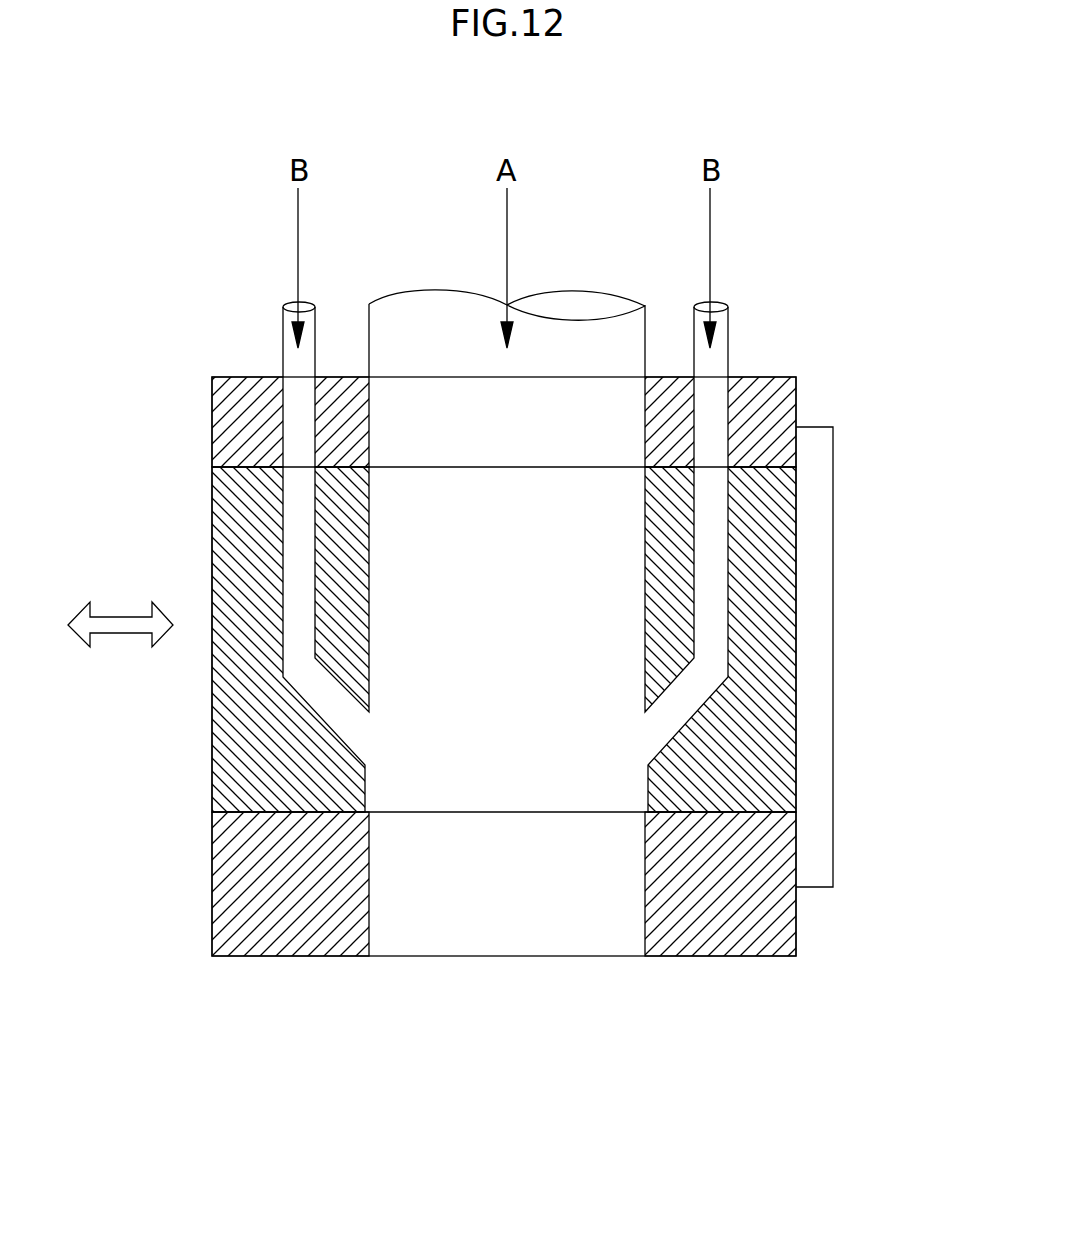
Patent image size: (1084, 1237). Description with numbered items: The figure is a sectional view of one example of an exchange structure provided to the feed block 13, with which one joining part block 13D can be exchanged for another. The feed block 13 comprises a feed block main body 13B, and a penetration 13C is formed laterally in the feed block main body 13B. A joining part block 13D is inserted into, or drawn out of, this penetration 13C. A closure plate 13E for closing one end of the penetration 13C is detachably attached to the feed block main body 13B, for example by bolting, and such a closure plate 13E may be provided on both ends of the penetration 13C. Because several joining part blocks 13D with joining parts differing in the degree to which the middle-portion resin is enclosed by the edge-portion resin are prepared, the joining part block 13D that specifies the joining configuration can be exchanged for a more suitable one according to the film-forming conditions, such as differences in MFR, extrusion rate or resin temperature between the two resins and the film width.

The feed block 13 is at (510, 656).
The feed block main body 13B is at (783, 418).
The penetration 13C is at (247, 462).
The joining part block 13D is at (240, 762).
The closure plate 13E is at (815, 540).